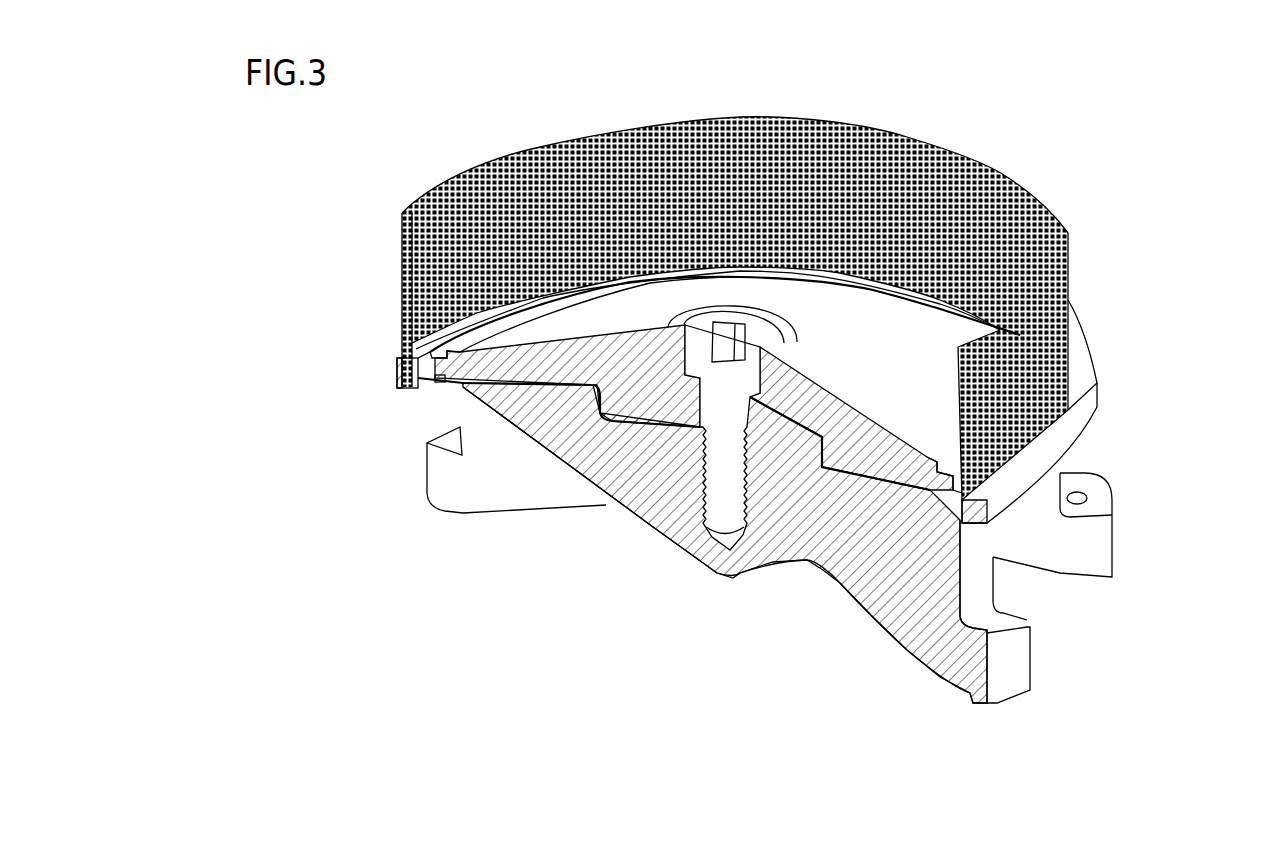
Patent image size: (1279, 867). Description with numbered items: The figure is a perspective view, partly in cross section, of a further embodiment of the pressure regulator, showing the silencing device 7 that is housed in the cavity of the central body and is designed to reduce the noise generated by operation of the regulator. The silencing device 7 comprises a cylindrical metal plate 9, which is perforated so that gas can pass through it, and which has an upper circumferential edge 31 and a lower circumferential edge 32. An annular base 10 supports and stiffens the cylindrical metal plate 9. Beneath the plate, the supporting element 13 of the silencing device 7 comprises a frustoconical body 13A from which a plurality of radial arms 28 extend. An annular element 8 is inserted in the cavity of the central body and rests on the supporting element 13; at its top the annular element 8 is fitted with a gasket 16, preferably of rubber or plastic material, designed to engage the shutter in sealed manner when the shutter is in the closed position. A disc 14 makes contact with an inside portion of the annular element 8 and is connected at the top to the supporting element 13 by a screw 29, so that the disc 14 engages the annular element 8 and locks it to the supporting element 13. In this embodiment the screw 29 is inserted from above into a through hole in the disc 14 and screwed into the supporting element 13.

The silencing device 7 is at (1078, 325).
The annular element 8 is at (470, 390).
The cylindrical metal plate 9 is at (1030, 190).
The annular base 10 is at (397, 372).
The supporting element 13 is at (1057, 622).
The frustoconical body 13A is at (570, 440).
The disc 14 is at (803, 427).
The gasket 16 is at (403, 273).
The radial arms 28 is at (1097, 542).
The screw 29 is at (717, 468).
The upper circumferential edge 31 is at (915, 138).
The lower circumferential edge 32 is at (400, 390).